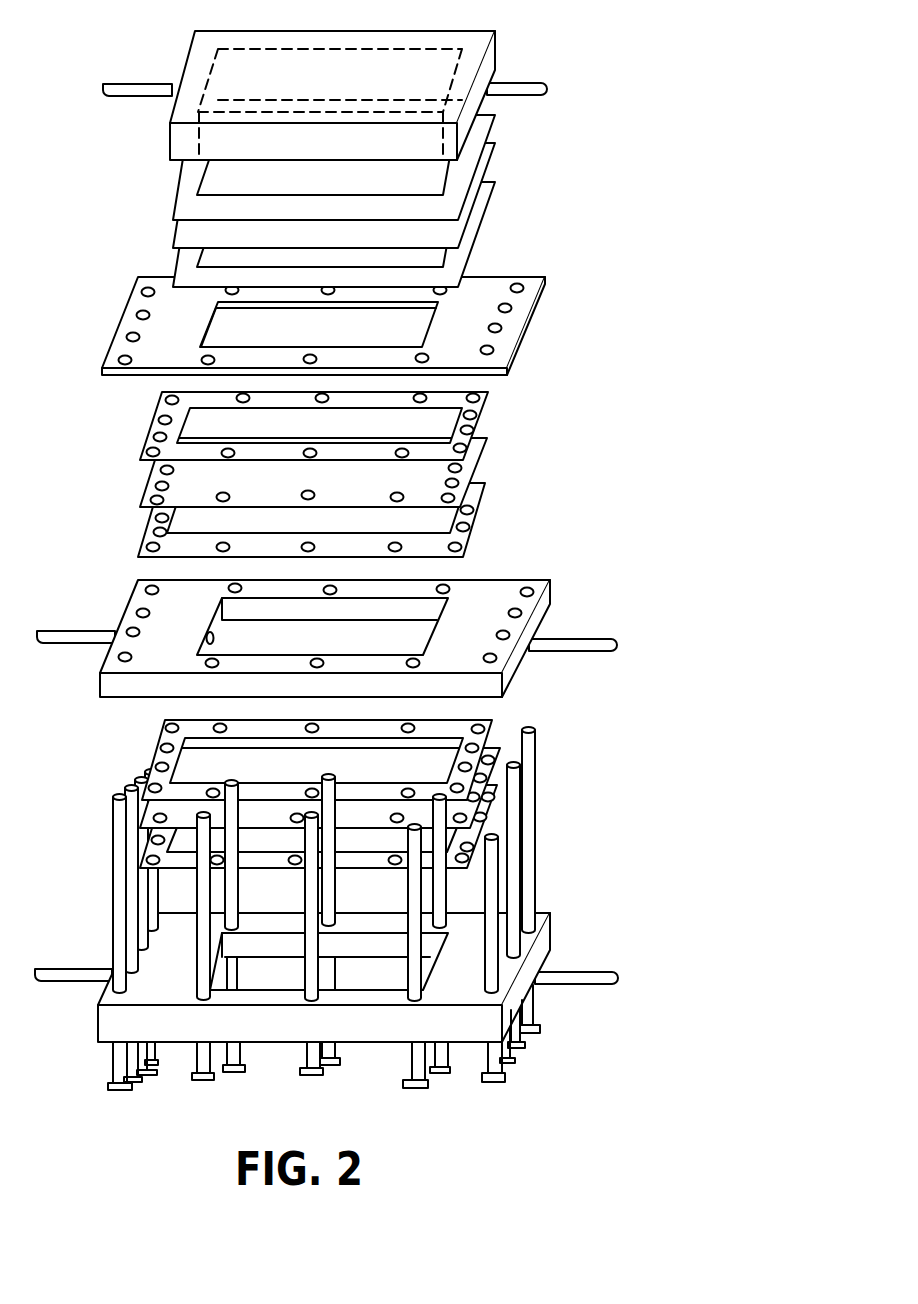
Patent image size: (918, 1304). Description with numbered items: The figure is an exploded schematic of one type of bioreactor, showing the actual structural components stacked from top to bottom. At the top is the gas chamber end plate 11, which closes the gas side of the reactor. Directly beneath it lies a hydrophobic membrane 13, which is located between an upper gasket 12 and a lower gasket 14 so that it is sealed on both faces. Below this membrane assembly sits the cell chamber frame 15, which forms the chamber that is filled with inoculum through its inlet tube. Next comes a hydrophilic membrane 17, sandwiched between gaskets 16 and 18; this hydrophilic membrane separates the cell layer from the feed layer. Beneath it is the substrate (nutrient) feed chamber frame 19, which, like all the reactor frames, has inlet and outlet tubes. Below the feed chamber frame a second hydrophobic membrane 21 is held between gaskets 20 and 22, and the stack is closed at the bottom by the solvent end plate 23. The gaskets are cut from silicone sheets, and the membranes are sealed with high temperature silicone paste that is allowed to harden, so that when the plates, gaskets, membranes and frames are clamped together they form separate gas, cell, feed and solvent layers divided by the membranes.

The gas chamber end plate 11 is at (493, 53).
The gasket 12 is at (473, 147).
The hydrophobic membrane 13 is at (453, 233).
The gasket 14 is at (455, 272).
The cell chamber frame 15 is at (498, 340).
The gasket 16 is at (473, 427).
The hydrophilic membrane 17 is at (455, 492).
The gasket 18 is at (457, 538).
The substrate feed chamber frame 19 is at (523, 605).
The gasket 20 is at (490, 725).
The hydrophobic membrane 21 is at (470, 810).
The gasket 22 is at (460, 862).
The solvent end plate 23 is at (540, 948).